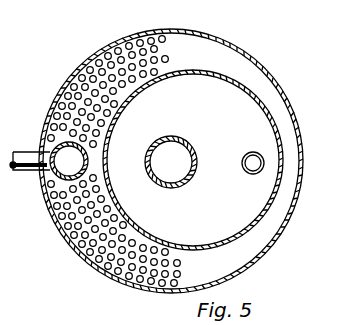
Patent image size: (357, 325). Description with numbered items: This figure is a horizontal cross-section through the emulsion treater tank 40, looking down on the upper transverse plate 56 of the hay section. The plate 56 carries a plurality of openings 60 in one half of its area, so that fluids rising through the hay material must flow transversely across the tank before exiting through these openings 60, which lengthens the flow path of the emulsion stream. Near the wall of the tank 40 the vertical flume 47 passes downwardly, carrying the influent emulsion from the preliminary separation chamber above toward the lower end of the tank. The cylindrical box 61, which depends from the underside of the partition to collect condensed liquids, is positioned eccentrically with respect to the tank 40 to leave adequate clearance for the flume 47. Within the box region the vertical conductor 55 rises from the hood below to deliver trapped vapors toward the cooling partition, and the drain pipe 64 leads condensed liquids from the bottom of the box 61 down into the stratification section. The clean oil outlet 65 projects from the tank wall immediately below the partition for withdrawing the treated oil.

The tank 40 is at (47, 103).
The upper transverse plate 56 is at (238, 263).
The cylindrical box 61 is at (190, 74).
The vertical conductor 55 is at (198, 163).
The drain pipe 64 is at (253, 152).
The vertical flume 47 is at (48, 170).
The clean oil outlet 65 is at (29, 151).
The openings 60 is at (57, 219).